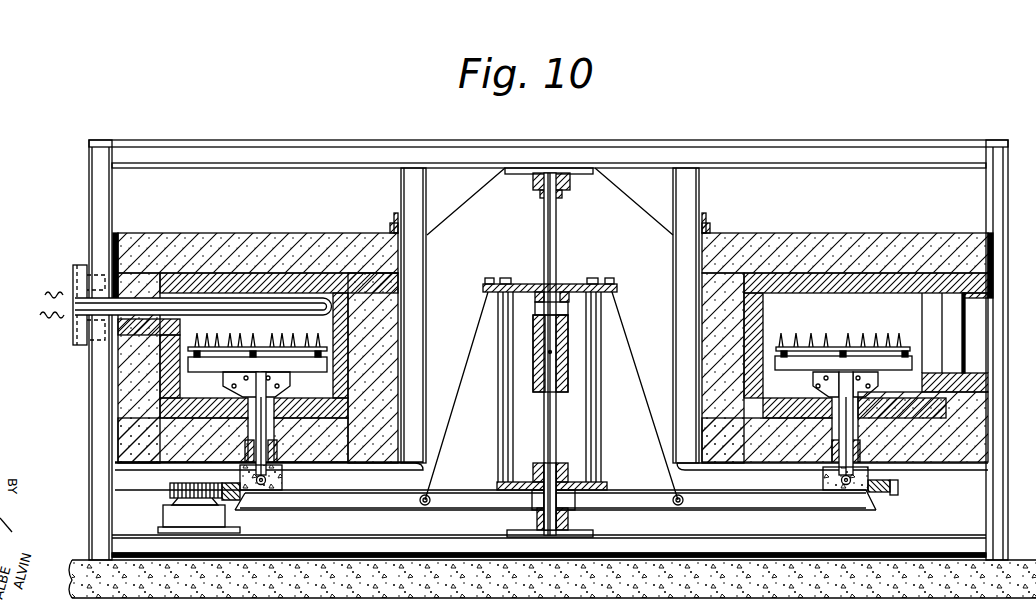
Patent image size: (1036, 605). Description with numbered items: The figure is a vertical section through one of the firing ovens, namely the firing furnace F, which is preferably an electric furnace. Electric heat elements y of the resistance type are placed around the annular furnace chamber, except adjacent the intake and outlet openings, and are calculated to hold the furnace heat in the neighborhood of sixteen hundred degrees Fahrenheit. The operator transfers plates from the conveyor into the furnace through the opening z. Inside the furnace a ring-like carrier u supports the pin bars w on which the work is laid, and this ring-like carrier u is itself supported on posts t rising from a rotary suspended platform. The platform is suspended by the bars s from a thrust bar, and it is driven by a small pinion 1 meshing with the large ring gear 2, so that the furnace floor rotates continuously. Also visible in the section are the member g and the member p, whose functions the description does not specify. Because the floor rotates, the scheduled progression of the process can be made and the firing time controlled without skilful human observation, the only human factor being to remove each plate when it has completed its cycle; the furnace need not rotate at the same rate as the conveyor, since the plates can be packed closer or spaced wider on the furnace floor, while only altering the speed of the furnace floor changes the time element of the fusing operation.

The firing furnace F is at (684, 140).
The electric heat elements y is at (232, 305).
The pin bars w is at (192, 350).
The ring-like carrier u is at (190, 363).
The posts t is at (245, 377).
The pinion 1 is at (170, 487).
The ring gear 2 is at (212, 503).
The base bar g is at (338, 510).
The collar p is at (538, 307).
The bars s is at (458, 406).
The opening z is at (982, 342).